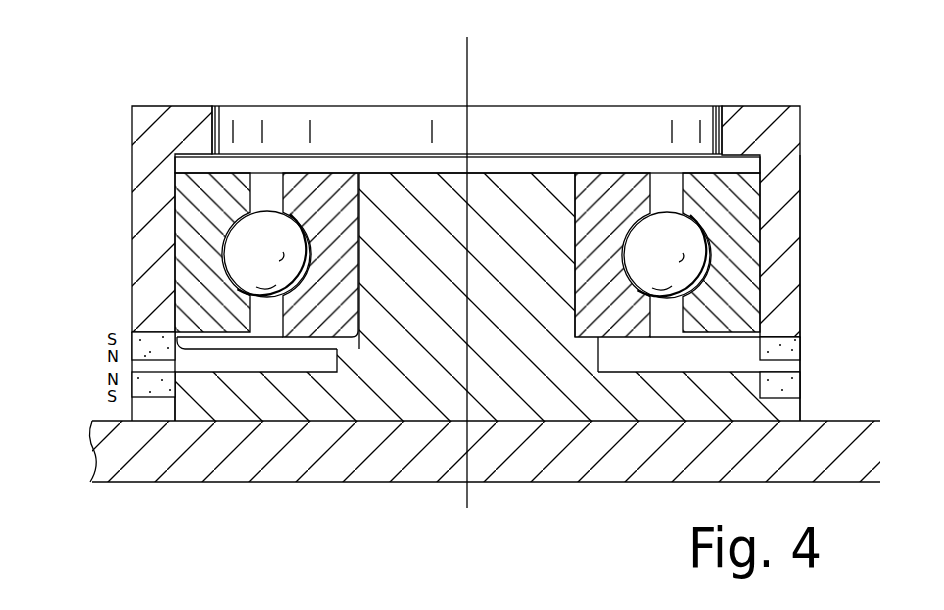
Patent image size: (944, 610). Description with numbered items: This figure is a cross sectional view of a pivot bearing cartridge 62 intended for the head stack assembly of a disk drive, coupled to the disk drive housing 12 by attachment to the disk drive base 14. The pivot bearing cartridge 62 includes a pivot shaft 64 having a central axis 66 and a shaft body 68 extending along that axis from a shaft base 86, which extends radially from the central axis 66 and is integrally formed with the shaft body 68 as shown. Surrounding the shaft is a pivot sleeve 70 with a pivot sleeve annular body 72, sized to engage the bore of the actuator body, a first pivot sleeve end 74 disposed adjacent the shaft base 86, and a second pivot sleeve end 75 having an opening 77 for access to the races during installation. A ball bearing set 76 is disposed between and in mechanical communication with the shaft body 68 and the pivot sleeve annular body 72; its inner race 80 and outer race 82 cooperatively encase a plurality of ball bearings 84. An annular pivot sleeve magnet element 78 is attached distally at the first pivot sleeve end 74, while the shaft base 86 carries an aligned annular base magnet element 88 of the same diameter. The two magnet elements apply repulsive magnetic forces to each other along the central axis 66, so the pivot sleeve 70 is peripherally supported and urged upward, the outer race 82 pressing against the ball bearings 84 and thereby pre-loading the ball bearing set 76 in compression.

The disk drive housing 12 is at (92, 421).
The disk drive base 14 is at (92, 455).
The pivot bearing cartridge 62 is at (491, 219).
The pivot shaft 64 is at (437, 335).
The central axis 66 is at (472, 45).
The shaft body 68 is at (528, 200).
The pivot sleeve 70 is at (785, 120).
The pivot sleeve annular body 72 is at (800, 182).
The first pivot sleeve end 74 is at (807, 312).
The second pivot sleeve end 75 is at (183, 120).
The ball bearing set 76 is at (267, 349).
The opening 77 is at (283, 109).
The pivot sleeve magnet element 78 is at (800, 348).
The inner race 80 is at (617, 200).
The outer race 82 is at (717, 200).
The ball bearings 84 is at (672, 282).
The shaft base 86 is at (662, 413).
The base magnet element 88 is at (800, 385).